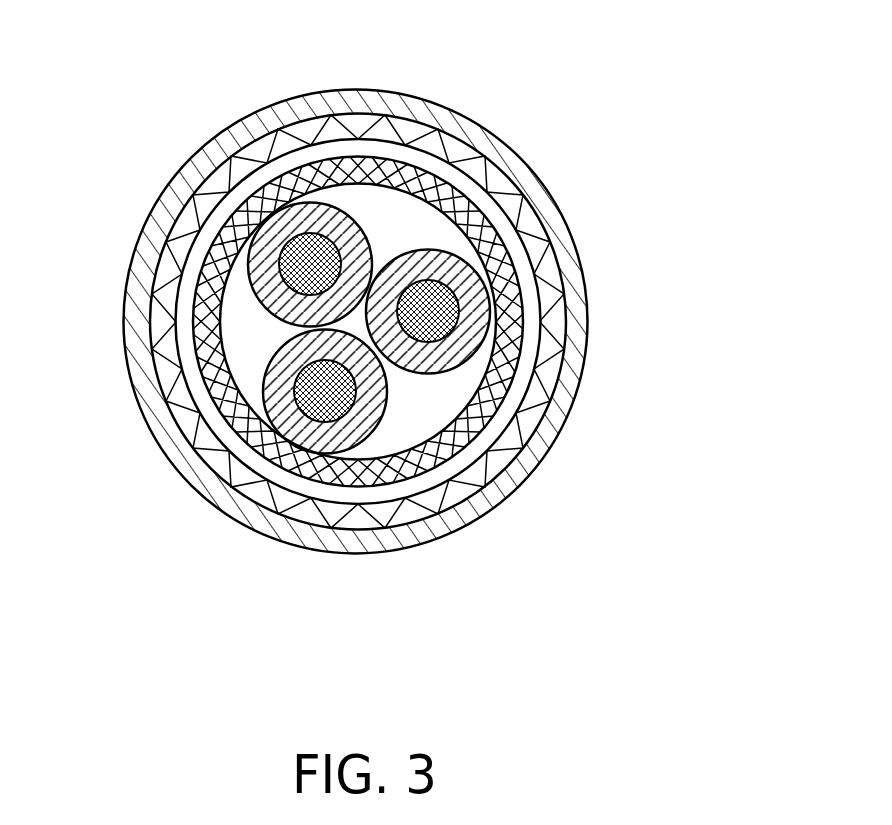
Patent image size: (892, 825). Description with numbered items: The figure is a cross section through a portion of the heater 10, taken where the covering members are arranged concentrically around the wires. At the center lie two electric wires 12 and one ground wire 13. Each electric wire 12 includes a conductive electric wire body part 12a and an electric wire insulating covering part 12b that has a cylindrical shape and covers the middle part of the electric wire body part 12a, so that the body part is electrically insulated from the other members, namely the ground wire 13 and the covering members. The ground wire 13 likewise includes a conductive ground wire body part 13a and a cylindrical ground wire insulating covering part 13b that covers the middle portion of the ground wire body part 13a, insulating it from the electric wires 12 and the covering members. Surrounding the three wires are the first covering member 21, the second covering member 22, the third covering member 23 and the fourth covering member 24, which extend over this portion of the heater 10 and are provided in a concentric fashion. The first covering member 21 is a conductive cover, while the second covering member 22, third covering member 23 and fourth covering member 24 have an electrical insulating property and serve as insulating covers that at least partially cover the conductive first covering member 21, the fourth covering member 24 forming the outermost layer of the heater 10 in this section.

The heater 10 is at (568, 82).
The electric wire 12 is at (206, 413).
The electric wire body part 12a is at (290, 258).
The electric wire insulating covering part 12b is at (267, 263).
The ground wire 13 is at (540, 371).
The ground wire body part 13a is at (448, 318).
The ground wire insulating covering part 13b is at (440, 360).
The first covering member 21 is at (453, 210).
The second covering member 22 is at (507, 233).
The third covering member 23 is at (543, 268).
The fourth covering member 24 is at (572, 295).